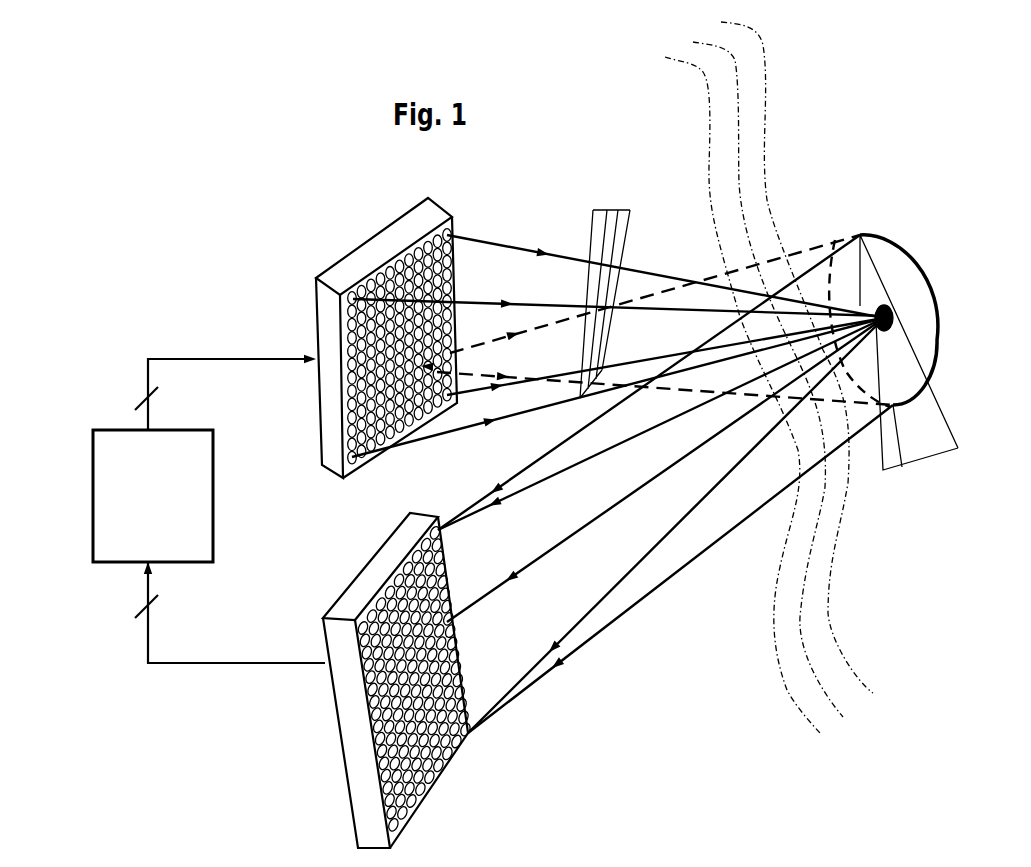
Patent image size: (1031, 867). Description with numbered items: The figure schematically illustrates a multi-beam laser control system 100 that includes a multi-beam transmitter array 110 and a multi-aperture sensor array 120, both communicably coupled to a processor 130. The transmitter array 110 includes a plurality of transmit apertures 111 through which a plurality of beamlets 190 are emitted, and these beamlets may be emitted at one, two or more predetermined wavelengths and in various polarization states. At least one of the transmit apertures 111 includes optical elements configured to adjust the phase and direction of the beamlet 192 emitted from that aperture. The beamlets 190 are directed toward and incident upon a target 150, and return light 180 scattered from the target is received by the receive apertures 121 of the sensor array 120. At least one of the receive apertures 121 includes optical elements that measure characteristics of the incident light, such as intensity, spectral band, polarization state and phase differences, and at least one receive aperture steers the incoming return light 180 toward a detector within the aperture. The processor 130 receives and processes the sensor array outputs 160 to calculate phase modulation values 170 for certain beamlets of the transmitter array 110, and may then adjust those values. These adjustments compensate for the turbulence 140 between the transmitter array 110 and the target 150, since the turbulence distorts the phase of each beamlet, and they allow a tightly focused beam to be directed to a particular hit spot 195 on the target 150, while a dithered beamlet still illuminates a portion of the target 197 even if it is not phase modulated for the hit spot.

The multi-beam control system 100 is at (222, 247).
The multi-beam transmitter array 110 is at (386, 325).
The transmit apertures 111 is at (404, 252).
The multi-aperture sensor array 120 is at (377, 680).
The receive apertures 121 is at (387, 795).
The processor 130 is at (153, 496).
The turbulence 140 is at (852, 722).
The target 150 is at (920, 432).
The sensor array outputs 160 is at (195, 667).
The phase modulation values 170 is at (182, 352).
The return light 180 is at (615, 510).
The beamlets 190 is at (615, 210).
The beamlet 192 is at (510, 377).
The hit spot 195 is at (893, 317).
The portion of the target 197 is at (914, 309).